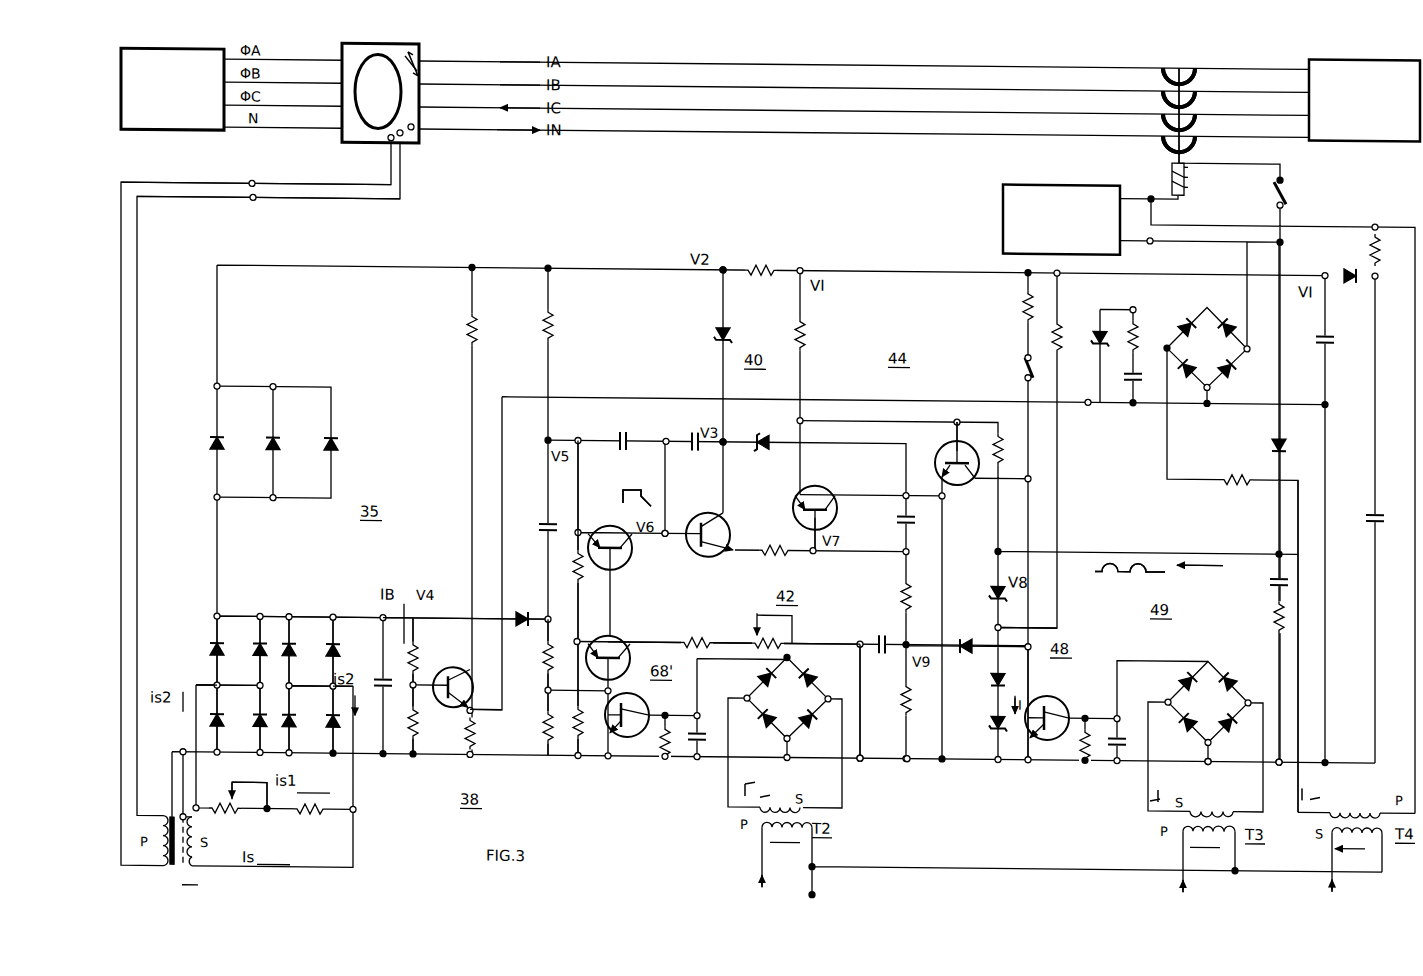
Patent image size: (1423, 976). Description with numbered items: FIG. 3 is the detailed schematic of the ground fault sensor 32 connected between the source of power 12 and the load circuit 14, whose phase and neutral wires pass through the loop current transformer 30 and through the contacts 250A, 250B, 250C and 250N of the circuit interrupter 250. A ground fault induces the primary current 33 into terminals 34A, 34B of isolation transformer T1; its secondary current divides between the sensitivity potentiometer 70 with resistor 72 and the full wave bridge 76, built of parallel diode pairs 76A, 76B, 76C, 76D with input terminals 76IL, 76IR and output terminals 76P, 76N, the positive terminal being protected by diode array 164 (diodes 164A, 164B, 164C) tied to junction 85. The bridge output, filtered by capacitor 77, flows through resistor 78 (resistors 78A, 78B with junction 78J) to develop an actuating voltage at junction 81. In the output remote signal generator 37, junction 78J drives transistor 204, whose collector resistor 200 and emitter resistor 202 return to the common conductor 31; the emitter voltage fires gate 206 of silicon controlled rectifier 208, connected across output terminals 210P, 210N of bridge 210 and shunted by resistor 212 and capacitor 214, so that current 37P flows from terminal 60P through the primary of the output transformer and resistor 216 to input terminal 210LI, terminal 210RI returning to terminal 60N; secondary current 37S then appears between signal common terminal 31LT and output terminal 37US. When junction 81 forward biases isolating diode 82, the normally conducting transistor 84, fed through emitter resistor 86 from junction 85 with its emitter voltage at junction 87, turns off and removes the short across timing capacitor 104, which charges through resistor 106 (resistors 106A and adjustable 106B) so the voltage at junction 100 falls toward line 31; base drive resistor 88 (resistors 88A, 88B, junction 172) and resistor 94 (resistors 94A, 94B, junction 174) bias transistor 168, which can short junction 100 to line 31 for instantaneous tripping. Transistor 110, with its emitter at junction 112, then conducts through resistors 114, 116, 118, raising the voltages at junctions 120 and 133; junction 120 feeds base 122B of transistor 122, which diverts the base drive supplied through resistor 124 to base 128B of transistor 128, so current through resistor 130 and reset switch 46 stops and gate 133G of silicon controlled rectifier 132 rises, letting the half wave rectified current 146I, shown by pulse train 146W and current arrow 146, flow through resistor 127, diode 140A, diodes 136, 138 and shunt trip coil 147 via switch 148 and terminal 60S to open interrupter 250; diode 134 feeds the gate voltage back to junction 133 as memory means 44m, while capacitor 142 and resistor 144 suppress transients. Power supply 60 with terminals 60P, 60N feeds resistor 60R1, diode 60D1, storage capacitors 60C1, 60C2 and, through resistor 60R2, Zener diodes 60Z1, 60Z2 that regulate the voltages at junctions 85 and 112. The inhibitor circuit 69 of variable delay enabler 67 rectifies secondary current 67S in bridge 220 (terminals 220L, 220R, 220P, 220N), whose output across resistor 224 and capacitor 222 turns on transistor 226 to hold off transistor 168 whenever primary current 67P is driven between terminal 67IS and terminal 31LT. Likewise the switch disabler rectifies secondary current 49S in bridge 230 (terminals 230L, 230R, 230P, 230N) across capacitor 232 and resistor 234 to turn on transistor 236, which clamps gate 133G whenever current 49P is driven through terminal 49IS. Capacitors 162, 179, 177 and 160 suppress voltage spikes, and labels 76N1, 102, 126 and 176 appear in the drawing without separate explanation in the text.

The source of power 12 is at (1398, 136).
The load circuit 14 is at (148, 132).
The loop current transformer 30 is at (358, 140).
The ground fault sensor 32 is at (754, 156).
The induced primary alternating current 33 is at (420, 62).
The primary winding terminal 34A is at (248, 180).
The primary winding terminal 34B is at (250, 197).
The output remote signal generator 37 is at (1314, 366).
The alternating current in primary winding of T4 37P is at (1316, 789).
The alternating current in secondary winding of T4 37S is at (1372, 839).
The output terminal 37US is at (1330, 876).
The memory means 44m is at (922, 793).
The reset means 46 is at (1022, 355).
The primary current of T3 49P is at (1224, 839).
The secondary current of T3 49S is at (1252, 779).
The input terminal 49IS is at (1180, 878).
The ground fault sensor power source 60 is at (1003, 180).
The first terminal of power source 60P is at (1151, 188).
The second terminal of power source 60N is at (1152, 232).
The terminal 60S is at (1276, 230).
The resistor 60R1 is at (1370, 234).
The resistor 60R2 is at (760, 262).
The diode 60D1 is at (1348, 258).
The storage capacitor 60C1 is at (1370, 504).
The second capacitor 60C2 is at (1345, 318).
The Zener diode 60Z1 is at (715, 332).
The Zener diode 60Z2 is at (762, 430).
The variable delay enabler circuit 67 is at (598, 718).
The secondary current of T2 67S is at (750, 777).
The primary current of T2 67P is at (800, 836).
The input terminal 67IS is at (760, 878).
The inhibitor circuit 69 is at (726, 724).
The potentiometer 70 is at (222, 796).
The resistor 72 is at (316, 812).
The full wave bridge rectifier circuit 76 is at (319, 688).
The parallel diode pair 76A is at (292, 646).
The parallel diode pair 76B is at (220, 722).
The parallel diode pair 76C is at (220, 646).
The parallel diode pair 76D is at (292, 722).
The input terminal 76IL is at (212, 680).
The input terminal 76IR is at (332, 684).
The positive output terminal 76P is at (382, 612).
The negative output terminal 76N is at (384, 754).
The negative node 76N1 is at (472, 752).
The filter capacitor 77 is at (386, 684).
The resistor 78 is at (429, 686).
The resistor 78A is at (418, 654).
The resistor 78B is at (417, 727).
The junction 78J is at (422, 682).
The junction 81 is at (418, 613).
The isolating diode 82 is at (523, 609).
The transistor 84 is at (608, 525).
The junction 85 is at (722, 266).
The resistor 86 is at (542, 322).
The junction 87 is at (579, 435).
The base drive resistor 88 is at (526, 687).
The resistor 88A is at (543, 651).
The resistor 88B is at (543, 724).
The resistive means 94 is at (554, 612).
The resistor 94A is at (571, 564).
The resistor 94B is at (572, 756).
The junction point 100 is at (668, 536).
The characteristic curve 102 is at (620, 494).
The timing and reset capacitor 104 is at (632, 424).
The resistive element 106 is at (734, 632).
The resistor 106A is at (696, 638).
The adjustable resistor 106B is at (750, 630).
The second transistor 110 is at (703, 516).
The junction 112 is at (724, 437).
The resistor 114 is at (770, 548).
The resistor 116 is at (910, 590).
The resistor 118 is at (902, 704).
The junction point 120 is at (818, 548).
The third transistor 122 is at (820, 488).
The base of transistor 122 122B is at (811, 534).
The resistor 124 is at (794, 330).
The node 126 is at (955, 412).
The resistor 127 is at (998, 422).
The transistor 128 is at (959, 476).
The base of transistor 128 128B is at (954, 435).
The resistor 130 is at (1022, 300).
The silicon controlled rectifier 132 is at (988, 584).
The junction point 133 is at (884, 622).
The gate terminal 133G is at (1057, 617).
The diode 134 is at (990, 628).
The diode 136 is at (992, 670).
The diode 138 is at (990, 713).
The diode 140A is at (1272, 433).
The capacitor 142 is at (1268, 570).
The resistor 144 is at (1274, 607).
The current path 146 is at (992, 696).
The pulse train 146W is at (1118, 570).
The current 146I is at (1213, 558).
The shunt trip coil 147 is at (1184, 185).
The switch 148 is at (1284, 188).
The capacitor 160 is at (862, 666).
The capacitor 162 is at (543, 524).
The parallel diode array 164 is at (264, 429).
The diode 164A is at (208, 442).
The diode 164B is at (264, 442).
The diode 164C is at (334, 438).
The transistor 168 is at (620, 636).
The junction 172 is at (530, 700).
The junction 174 is at (584, 636).
The zener diode 176 is at (1098, 338).
The capacitor 177 is at (898, 510).
The capacitor 179 is at (694, 432).
The collector resistor 200 is at (465, 327).
The emitter resistor 202 is at (474, 736).
The transistor 204 is at (416, 720).
The gate 206 is at (1088, 396).
The silicon controlled rectifier 208 is at (1065, 320).
The bridge circuit 210 is at (1214, 355).
The output terminal 210P is at (1210, 297).
The output terminal 210N is at (1207, 394).
The input terminal 210LI is at (1172, 312).
The input terminal 210RI is at (1247, 343).
The resistor 212 is at (1132, 301).
The capacitor 214 is at (1132, 398).
The resistor 216 is at (1240, 485).
The bridge rectifier circuit 220 is at (778, 714).
The positive output terminal 220P is at (784, 649).
The negative output terminal 220N is at (787, 754).
The input terminal 220L is at (746, 690).
The input terminal 220R is at (838, 680).
The capacitor 222 is at (694, 750).
The resistor 224 is at (660, 740).
The transistor 226 is at (646, 694).
The input bridge rectifier circuit 230 is at (1189, 717).
The positive output terminal 230P is at (1206, 648).
The negative output terminal 230N is at (1206, 756).
The input terminal 230L is at (1166, 690).
The input terminal 230R is at (1255, 660).
The capacitor 232 is at (1106, 708).
The resistor 234 is at (1080, 736).
The transistor 236 is at (1046, 688).
The circuit interrupter 250 is at (1238, 154).
The circuit breaker contact 250A is at (1162, 54).
The circuit breaker contact 250B is at (1162, 78).
The circuit breaker contact 250C is at (1162, 101).
The circuit breaker contact 250N is at (1162, 124).
The common conductor 31 is at (883, 756).
The signal common terminal 31LT is at (816, 887).
The isolation transformer T1 is at (185, 851).